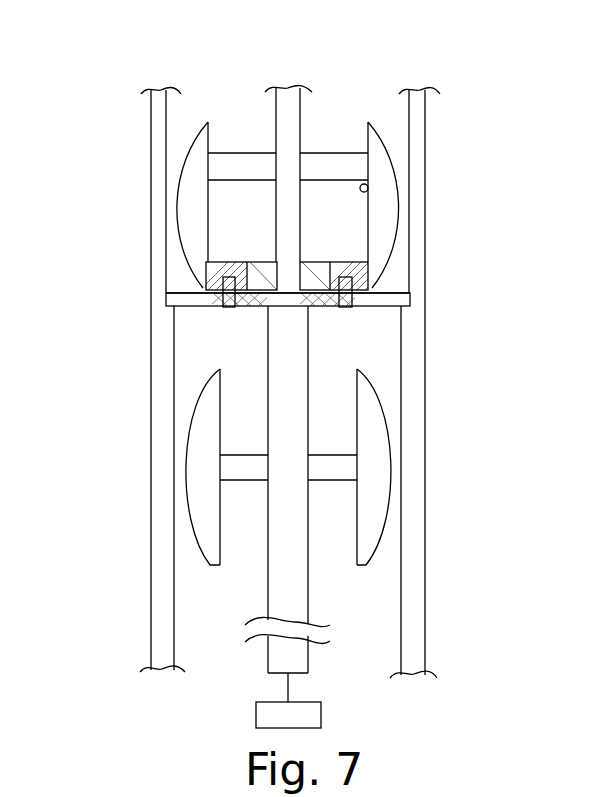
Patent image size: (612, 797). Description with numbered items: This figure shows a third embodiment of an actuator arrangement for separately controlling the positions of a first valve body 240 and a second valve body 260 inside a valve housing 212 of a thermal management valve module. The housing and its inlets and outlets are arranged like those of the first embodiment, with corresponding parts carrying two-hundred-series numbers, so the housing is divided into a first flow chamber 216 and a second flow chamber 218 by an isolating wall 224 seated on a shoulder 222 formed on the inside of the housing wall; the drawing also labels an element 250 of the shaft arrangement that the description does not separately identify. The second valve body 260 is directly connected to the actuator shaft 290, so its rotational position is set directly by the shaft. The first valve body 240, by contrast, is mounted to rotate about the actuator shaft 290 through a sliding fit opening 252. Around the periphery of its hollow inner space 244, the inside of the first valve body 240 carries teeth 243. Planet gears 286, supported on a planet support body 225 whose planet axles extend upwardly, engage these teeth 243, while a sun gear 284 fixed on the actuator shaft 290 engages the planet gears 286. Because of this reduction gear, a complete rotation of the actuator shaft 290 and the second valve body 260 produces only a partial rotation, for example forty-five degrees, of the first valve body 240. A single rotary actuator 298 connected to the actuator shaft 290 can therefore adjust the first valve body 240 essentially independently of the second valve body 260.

The valve housing 212 is at (427, 138).
The upper lens assembly 216 is at (218, 104).
The lower lens assembly 218 is at (375, 595).
The mounting plate 222 is at (410, 307).
The upper surface of mounting plate 224 is at (390, 292).
The planet support body 225 is at (340, 310).
The first valve body 240 is at (185, 153).
The teeth 243 is at (372, 278).
The hollow inner space 244 is at (368, 188).
The lens mount flange 250 is at (342, 156).
The sliding fit opening 252 is at (310, 143).
The second valve body 260 is at (397, 400).
The sun gear 284 is at (320, 257).
The planet gears 286 is at (352, 272).
The actuator shaft 290 is at (267, 368).
The rotary actuator 298 is at (288, 700).